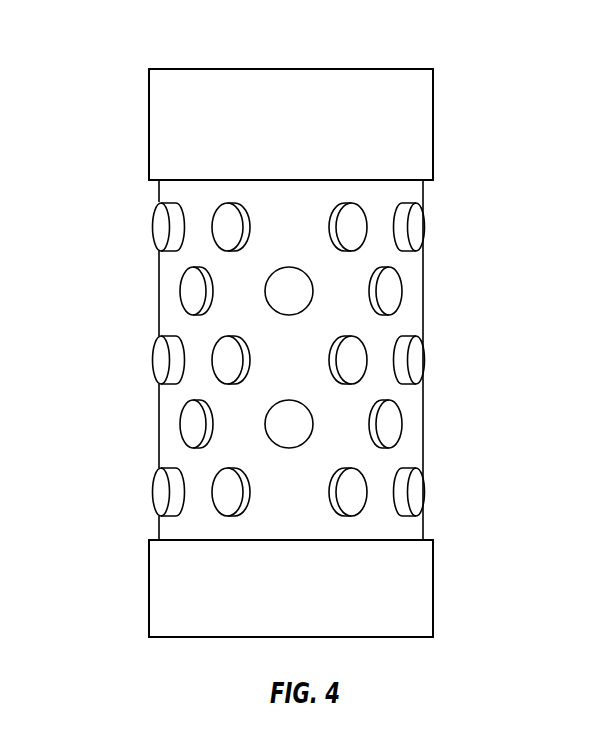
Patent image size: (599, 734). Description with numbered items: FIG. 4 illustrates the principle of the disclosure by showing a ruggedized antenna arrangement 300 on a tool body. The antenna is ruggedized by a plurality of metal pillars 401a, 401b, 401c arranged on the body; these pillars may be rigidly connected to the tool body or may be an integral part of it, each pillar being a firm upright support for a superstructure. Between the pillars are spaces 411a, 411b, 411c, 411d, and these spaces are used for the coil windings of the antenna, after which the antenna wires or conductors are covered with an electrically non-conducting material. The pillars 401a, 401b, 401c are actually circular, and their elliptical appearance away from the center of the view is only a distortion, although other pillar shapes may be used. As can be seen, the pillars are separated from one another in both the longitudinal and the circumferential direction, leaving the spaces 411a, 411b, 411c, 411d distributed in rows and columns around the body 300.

The roller 300 is at (282, 318).
The metal pillar 401a is at (425, 226).
The metal pillar 401b is at (346, 202).
The metal pillar 401c is at (398, 282).
The space 411a is at (247, 347).
The space 411b is at (367, 345).
The space 411c is at (313, 420).
The space 411d is at (331, 491).